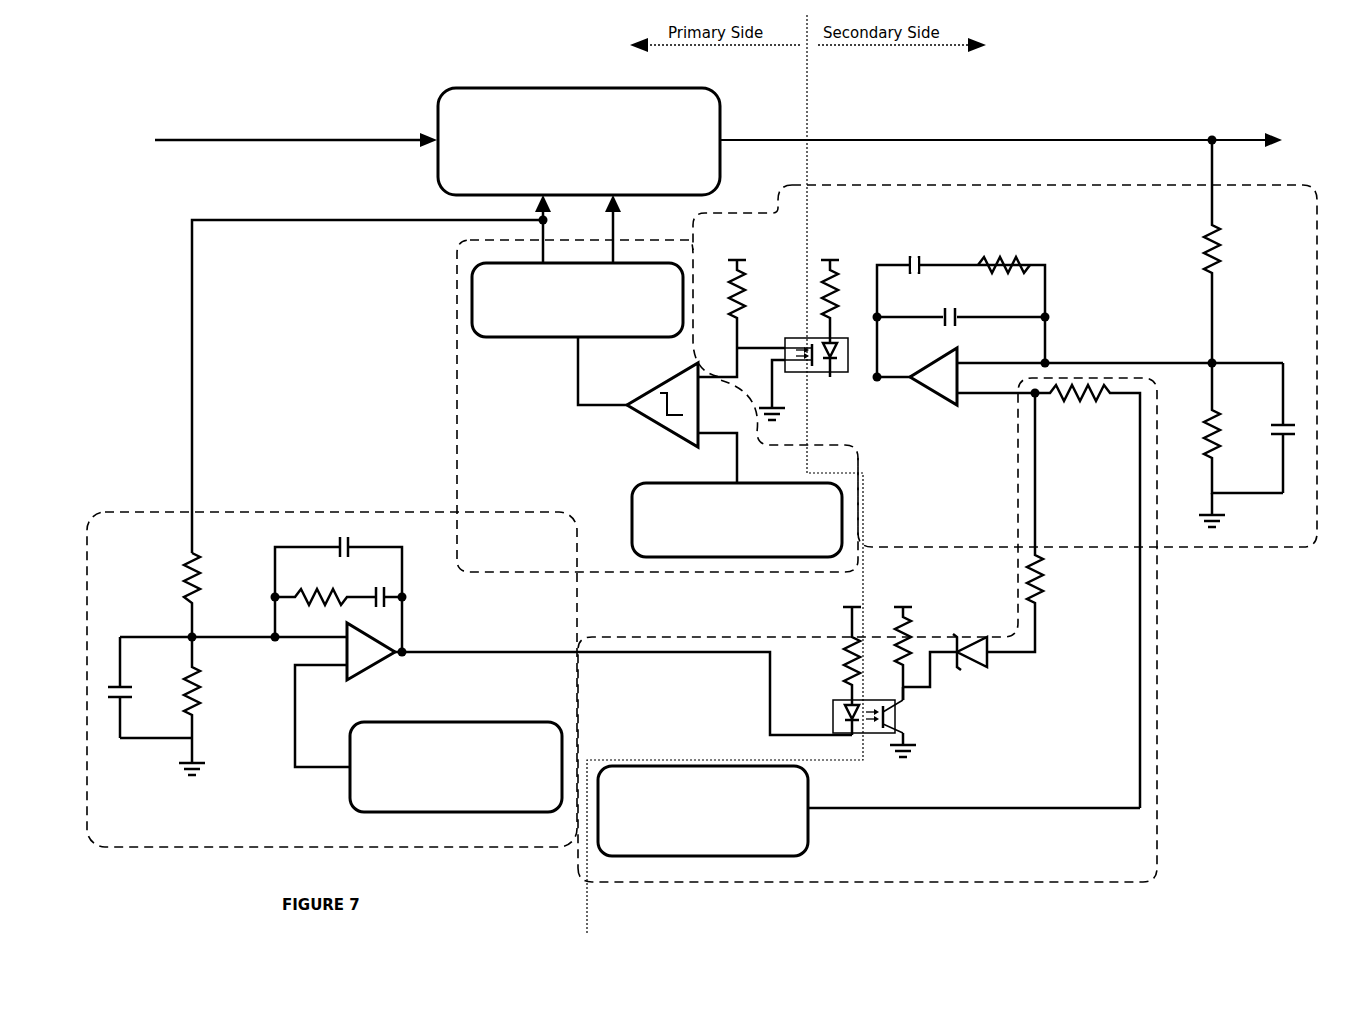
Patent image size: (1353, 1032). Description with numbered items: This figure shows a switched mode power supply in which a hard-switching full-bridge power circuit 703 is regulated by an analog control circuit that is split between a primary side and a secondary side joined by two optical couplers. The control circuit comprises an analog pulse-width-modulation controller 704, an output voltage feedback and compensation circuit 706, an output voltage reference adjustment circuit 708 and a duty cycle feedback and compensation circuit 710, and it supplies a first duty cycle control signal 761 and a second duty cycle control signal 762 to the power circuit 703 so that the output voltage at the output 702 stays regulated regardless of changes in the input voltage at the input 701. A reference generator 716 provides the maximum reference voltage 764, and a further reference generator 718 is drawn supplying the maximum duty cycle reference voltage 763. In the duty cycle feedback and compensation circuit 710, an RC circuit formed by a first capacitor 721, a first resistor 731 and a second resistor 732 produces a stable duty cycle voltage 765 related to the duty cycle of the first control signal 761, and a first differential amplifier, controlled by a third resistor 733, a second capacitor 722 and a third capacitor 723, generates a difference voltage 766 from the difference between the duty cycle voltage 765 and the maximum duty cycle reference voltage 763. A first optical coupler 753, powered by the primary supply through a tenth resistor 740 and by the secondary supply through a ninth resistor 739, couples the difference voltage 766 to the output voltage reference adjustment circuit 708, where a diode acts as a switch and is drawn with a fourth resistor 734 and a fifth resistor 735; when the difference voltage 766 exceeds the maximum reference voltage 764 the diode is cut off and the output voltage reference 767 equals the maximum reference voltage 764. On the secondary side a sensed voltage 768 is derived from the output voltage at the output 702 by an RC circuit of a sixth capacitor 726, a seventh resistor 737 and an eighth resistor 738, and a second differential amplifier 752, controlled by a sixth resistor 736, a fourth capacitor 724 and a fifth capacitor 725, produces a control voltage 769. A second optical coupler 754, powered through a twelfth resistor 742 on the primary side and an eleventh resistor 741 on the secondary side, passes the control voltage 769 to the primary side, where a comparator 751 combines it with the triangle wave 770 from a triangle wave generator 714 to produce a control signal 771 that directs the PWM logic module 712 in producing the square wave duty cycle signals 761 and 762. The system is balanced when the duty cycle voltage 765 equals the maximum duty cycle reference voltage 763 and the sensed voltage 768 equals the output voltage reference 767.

The input 701 is at (220, 116).
The output 702 is at (1172, 115).
The hard-switching full-bridge power circuit 703 is at (579, 141).
The analog pulse-width-modulation controller 704 is at (741, 435).
The output voltage feedback and compensation circuit 706 is at (1005, 474).
The output voltage reference adjustment circuit 708 is at (867, 630).
The duty cycle feedback and compensation circuit 710 is at (469, 679).
The PWM logic module 712 is at (577, 300).
The triangle wave generator 714 is at (737, 520).
The reference generator 716 is at (703, 811).
The reference generator 718 is at (456, 767).
The capacitor C1 721 is at (129, 687).
The capacitor C2 722 is at (338, 592).
The capacitor C3 723 is at (381, 599).
The capacitor C4 724 is at (963, 312).
The capacitor C5 725 is at (899, 265).
The capacitor C6 726 is at (1293, 428).
The resistor R1 731 is at (176, 588).
The resistor R2 732 is at (162, 706).
The resistor R3 733 is at (324, 599).
The resistor R4 734 is at (1029, 522).
The resistor R5 735 is at (1087, 596).
The resistor R6 736 is at (1001, 260).
The resistor R7 737 is at (1230, 445).
The resistor R8 738 is at (1225, 251).
The resistor R9 739 is at (894, 643).
The resistor R10 740 is at (840, 643).
The resistor R11 741 is at (843, 288).
The resistor R12 742 is at (725, 307).
The comparator COI 751 is at (371, 657).
The operational amplifier U2 752 is at (929, 386).
The optical coupler U3 753 is at (863, 722).
The optical coupler U4 754 is at (800, 379).
The control signal Ds 761 is at (423, 374).
The control signal Dsr 762 is at (628, 229).
The maximum duty cycle reference voltage VDref 763 is at (322, 717).
The maximum reference voltage Vref0 764 is at (974, 798).
The duty cycle voltage VDt 765 is at (233, 636).
The voltage Vt 766 is at (623, 682).
The output voltage reference Vref 767 is at (998, 400).
The sensed voltage Vs 768 is at (1120, 355).
The control voltage 769 is at (959, 323).
The triangle wave 770 is at (718, 449).
The control signal 771 is at (802, 485).